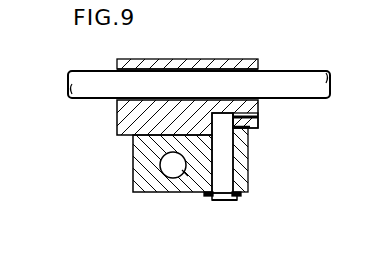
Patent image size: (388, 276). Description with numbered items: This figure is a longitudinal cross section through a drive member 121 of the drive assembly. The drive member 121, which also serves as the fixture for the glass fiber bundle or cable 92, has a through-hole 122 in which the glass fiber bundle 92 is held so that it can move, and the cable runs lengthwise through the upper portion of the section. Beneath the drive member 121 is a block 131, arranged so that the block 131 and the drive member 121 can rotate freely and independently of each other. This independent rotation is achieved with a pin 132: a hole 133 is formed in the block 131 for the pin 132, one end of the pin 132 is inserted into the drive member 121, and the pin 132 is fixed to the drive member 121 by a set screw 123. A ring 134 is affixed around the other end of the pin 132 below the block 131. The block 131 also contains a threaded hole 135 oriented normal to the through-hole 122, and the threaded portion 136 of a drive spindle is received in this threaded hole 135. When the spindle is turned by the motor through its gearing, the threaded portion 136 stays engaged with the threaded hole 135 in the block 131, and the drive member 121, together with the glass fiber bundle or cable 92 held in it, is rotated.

The glass fiber bundle 92 is at (85, 98).
The through-hole 122 is at (220, 60).
The drive member 121 is at (118, 133).
The set screw 123 is at (258, 120).
The block 131 is at (140, 188).
The threaded hole 135 is at (174, 178).
The threaded portion 136 is at (186, 174).
The hole 133 is at (240, 165).
The ring 134 is at (241, 195).
The pin 132 is at (226, 200).